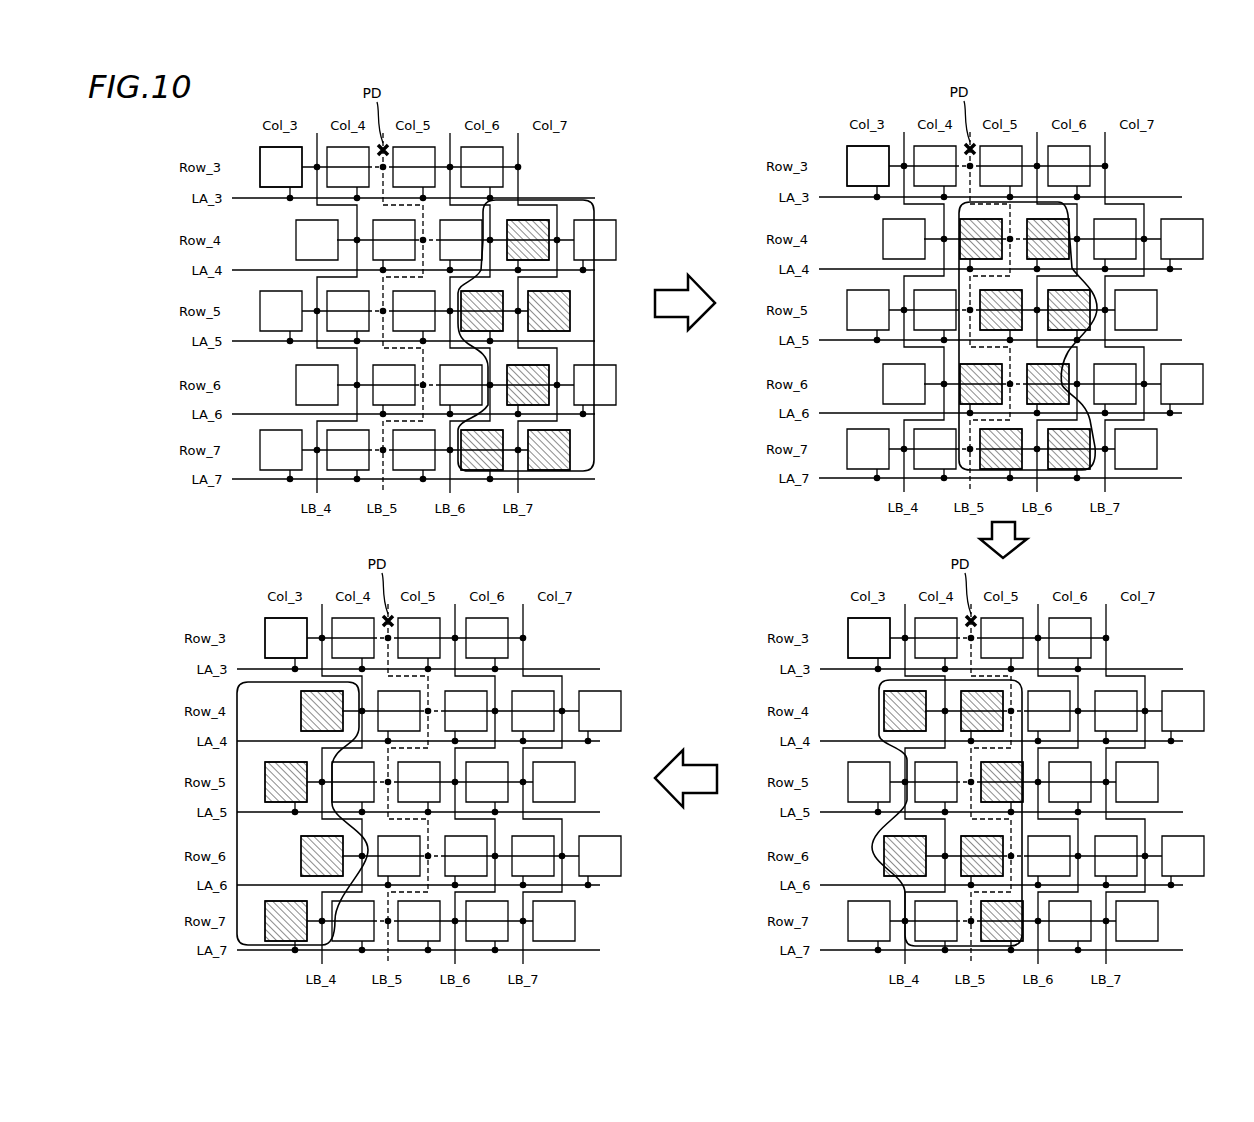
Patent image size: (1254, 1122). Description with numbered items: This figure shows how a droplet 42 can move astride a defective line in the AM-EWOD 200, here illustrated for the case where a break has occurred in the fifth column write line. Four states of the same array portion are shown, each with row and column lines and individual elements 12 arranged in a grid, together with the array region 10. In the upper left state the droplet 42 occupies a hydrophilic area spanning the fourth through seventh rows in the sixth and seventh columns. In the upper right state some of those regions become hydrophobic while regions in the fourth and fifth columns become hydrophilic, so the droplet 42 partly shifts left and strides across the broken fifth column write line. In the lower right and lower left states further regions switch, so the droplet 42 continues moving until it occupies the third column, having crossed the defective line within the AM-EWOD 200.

The pixel 12 is at (265, 160).
The display device 10 is at (598, 165).
The AM-EWOD 200 is at (628, 168).
The droplet 42 is at (583, 352).